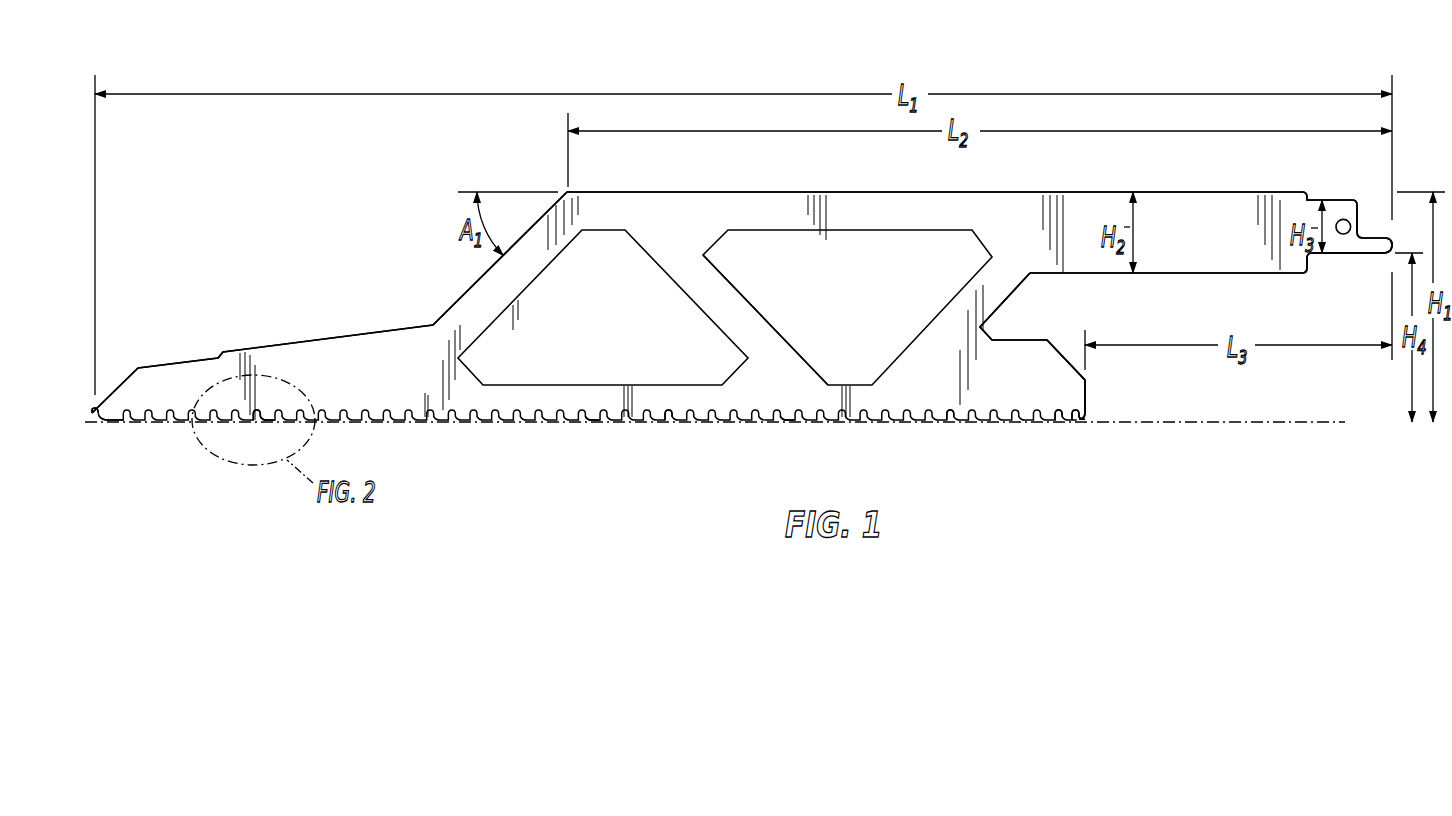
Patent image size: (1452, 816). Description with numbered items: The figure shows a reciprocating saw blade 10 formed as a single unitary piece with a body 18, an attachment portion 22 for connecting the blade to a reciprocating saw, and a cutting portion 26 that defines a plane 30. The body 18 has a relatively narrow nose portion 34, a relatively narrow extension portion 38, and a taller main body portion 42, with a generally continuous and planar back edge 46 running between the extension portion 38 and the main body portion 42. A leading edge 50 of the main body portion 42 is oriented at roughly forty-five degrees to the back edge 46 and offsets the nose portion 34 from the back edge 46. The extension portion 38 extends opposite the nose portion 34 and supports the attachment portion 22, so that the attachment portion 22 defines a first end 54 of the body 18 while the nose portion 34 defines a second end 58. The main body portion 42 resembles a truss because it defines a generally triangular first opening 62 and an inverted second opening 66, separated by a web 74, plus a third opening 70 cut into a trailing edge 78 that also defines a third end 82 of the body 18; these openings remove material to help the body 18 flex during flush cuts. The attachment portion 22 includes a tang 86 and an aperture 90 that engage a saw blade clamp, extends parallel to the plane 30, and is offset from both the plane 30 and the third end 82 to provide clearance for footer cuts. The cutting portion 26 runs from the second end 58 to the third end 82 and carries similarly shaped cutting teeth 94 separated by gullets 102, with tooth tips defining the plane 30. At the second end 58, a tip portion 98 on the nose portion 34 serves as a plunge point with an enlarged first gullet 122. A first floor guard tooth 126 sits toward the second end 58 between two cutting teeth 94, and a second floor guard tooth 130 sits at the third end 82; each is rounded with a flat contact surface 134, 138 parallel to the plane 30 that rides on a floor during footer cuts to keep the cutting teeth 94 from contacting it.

The saw blade 10 is at (1090, 58).
The body 18 is at (1002, 208).
The attachment portion 22 is at (1343, 207).
The cutting portion 26 is at (503, 440).
The plane 30 is at (1338, 424).
The nose portion 34 is at (293, 353).
The extension portion 38 is at (1178, 210).
The main body portion 42 is at (738, 208).
The back edge 46 is at (1083, 192).
The leading edge 50 is at (475, 282).
The first end 54 is at (1395, 247).
The second end 58 is at (90, 417).
The first opening 62 is at (848, 263).
The second opening 66 is at (598, 262).
The third opening 70 is at (1035, 318).
The web 74 is at (737, 315).
The trailing edge 78 is at (1080, 387).
The third end 82 is at (1080, 412).
The tang 86 is at (1380, 245).
The aperture 90 is at (1343, 234).
The cutting teeth 94 is at (657, 420).
The tip portion 98 is at (112, 393).
The gullets 102 is at (580, 423).
The enlarged first gullet 122 is at (120, 418).
The first floor guard tooth 126 is at (247, 423).
The second floor guard tooth 130 is at (1057, 423).
The contact surface 134 is at (265, 423).
The contact surface 138 is at (1078, 421).